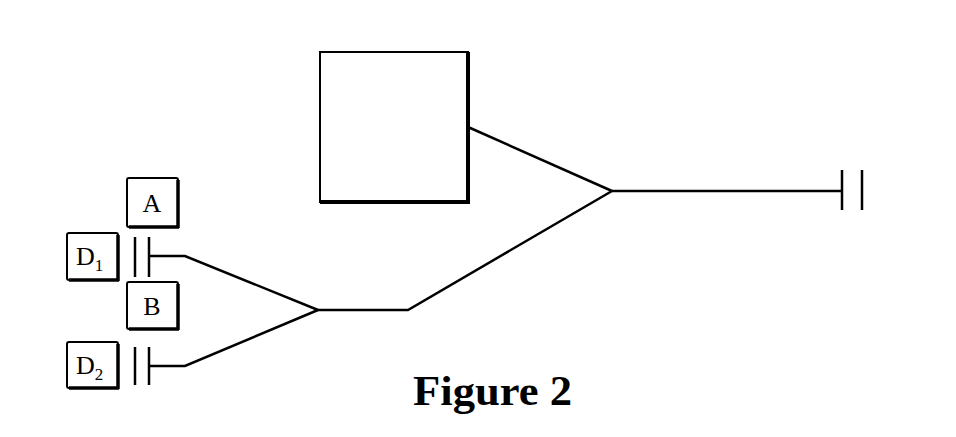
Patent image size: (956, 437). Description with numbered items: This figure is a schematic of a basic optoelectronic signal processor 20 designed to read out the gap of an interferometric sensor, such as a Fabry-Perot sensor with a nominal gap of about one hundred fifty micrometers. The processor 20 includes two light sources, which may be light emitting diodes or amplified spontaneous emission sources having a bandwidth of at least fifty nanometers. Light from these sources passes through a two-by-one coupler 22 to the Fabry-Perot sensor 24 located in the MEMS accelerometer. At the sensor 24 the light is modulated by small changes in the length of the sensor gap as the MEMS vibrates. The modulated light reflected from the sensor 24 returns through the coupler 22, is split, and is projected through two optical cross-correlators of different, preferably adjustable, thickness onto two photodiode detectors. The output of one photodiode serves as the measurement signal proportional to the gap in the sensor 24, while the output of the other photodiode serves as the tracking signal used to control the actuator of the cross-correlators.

The optoelectronic signal processor 20 is at (290, 92).
The 2×1 coupler 22 is at (612, 190).
The Fabry-Perot sensor 24 is at (853, 135).